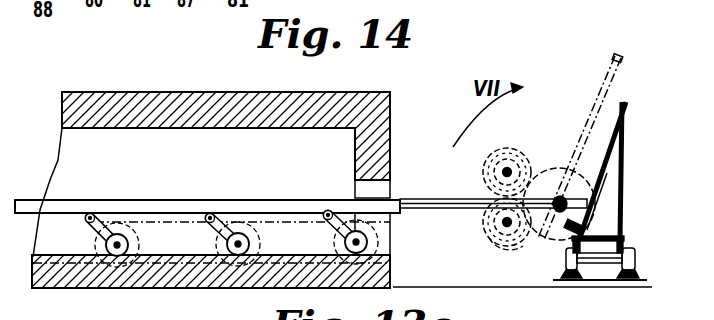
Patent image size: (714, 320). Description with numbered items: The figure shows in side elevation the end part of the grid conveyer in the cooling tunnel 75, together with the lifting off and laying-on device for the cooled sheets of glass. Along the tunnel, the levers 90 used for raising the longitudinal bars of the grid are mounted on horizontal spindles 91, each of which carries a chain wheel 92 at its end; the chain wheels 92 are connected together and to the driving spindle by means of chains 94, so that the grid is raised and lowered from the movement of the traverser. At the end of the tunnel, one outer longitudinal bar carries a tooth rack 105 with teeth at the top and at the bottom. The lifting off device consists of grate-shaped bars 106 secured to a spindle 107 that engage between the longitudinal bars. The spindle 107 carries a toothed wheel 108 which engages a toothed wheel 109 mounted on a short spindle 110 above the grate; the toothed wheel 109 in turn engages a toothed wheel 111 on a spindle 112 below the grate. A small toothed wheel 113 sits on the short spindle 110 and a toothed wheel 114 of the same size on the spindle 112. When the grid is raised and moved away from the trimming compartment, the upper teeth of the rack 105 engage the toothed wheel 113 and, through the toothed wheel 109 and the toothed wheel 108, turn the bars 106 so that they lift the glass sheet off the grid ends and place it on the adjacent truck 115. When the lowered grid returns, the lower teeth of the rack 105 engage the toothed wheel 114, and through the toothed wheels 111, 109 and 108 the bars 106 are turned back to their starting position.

The cooling tunnel 75 is at (193, 143).
The lever 90 is at (88, 225).
The horizontal spindle 91 is at (218, 240).
The chain wheel 92 is at (137, 243).
The chain 94 is at (182, 270).
The tooth rack 105 is at (480, 198).
The grate-shaped bar 106 is at (615, 59).
The spindle 107 is at (571, 236).
The toothed wheel 108 is at (616, 176).
The toothed wheel 109 is at (532, 168).
The short spindle 110 is at (507, 168).
The toothed wheel 111 is at (522, 251).
The spindle 112 is at (507, 228).
The small toothed wheel 113 is at (487, 163).
The toothed wheel 114 is at (488, 237).
The truck 115 is at (605, 206).